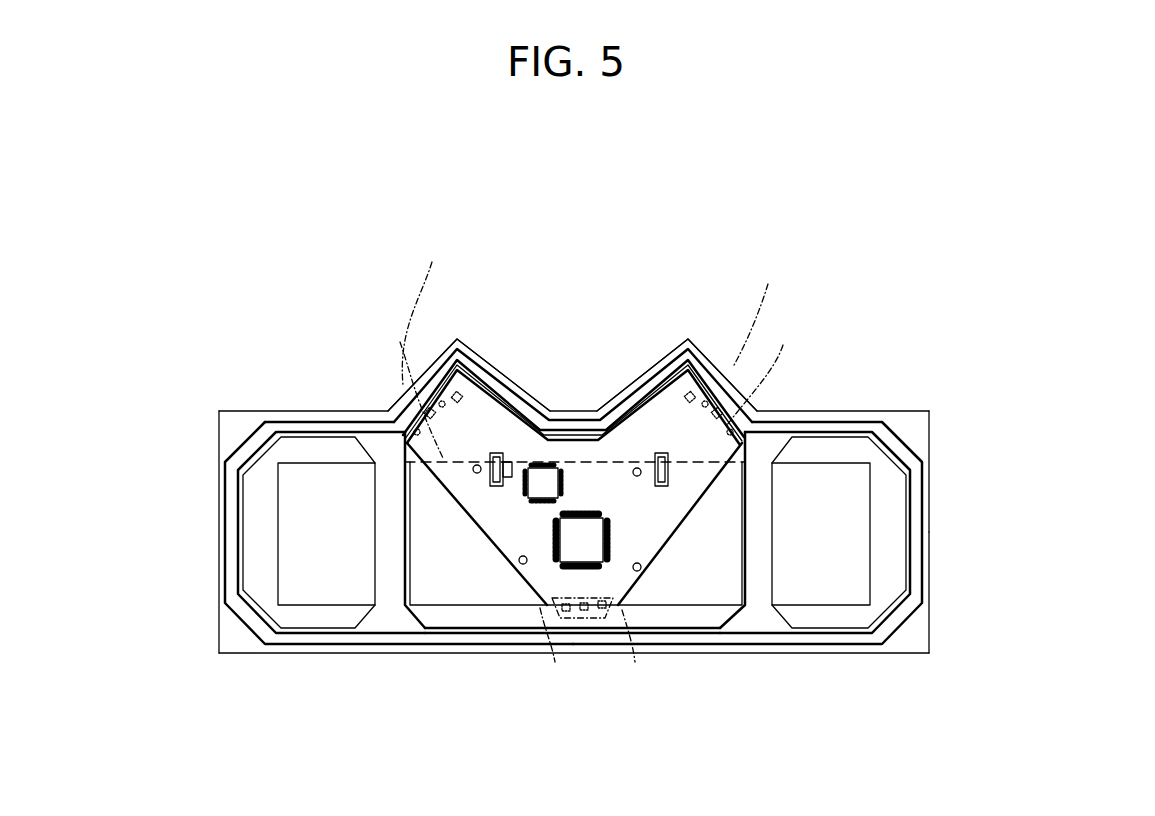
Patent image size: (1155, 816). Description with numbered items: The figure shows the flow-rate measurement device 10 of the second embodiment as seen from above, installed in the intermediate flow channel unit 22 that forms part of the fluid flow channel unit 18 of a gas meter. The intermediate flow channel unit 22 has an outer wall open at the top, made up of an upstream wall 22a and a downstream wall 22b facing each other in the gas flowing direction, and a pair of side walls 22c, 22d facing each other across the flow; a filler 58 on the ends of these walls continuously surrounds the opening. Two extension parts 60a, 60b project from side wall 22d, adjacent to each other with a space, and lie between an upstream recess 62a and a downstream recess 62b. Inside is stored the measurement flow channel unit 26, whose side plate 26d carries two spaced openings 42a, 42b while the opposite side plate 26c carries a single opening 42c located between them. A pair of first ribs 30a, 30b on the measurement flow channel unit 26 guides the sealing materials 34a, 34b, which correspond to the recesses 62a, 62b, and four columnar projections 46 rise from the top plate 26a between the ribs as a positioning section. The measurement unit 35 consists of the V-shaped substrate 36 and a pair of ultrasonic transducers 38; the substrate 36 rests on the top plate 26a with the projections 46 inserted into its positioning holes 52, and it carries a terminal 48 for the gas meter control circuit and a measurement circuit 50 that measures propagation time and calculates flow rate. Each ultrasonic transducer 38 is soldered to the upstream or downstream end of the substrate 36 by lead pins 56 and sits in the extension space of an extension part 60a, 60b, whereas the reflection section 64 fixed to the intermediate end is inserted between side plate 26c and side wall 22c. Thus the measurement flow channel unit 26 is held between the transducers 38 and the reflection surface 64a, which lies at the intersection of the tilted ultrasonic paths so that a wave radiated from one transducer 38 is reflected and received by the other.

The flow-rate measurement device 10 is at (895, 255).
The fluid flow channel unit 18 is at (930, 627).
The intermediate flow channel unit 22 is at (897, 654).
The upstream wall 22a is at (219, 540).
The downstream wall 22b is at (930, 527).
The side wall 22c is at (300, 654).
The side wall 22d is at (303, 411).
The measurement flow channel unit 26 is at (290, 457).
The top plate 26a is at (860, 527).
The side plate 26c is at (505, 606).
The side plate 26d is at (802, 463).
The first rib 30a is at (408, 612).
The first rib 30b is at (740, 610).
The sealing material 34a is at (383, 467).
The sealing material 34b is at (765, 468).
The measurement unit 35 is at (507, 372).
The substrate 36 is at (492, 422).
The ultrasonic transducer 38 is at (595, 310).
The opening 42a is at (417, 384).
The opening 42b is at (751, 374).
The opening 42c is at (638, 655).
The projection 46 is at (637, 468).
The terminal 48 is at (662, 453).
The measurement circuit 50 is at (578, 530).
The positioning hole 52 is at (600, 462).
The lead pin 56 is at (727, 375).
The filler 58 is at (927, 467).
The extension part 60a is at (465, 345).
The extension part 60b is at (703, 355).
The upstream recess 62a is at (388, 627).
The downstream recess 62b is at (767, 627).
The reflection section 64 is at (590, 620).
The reflection surface 64a is at (555, 662).